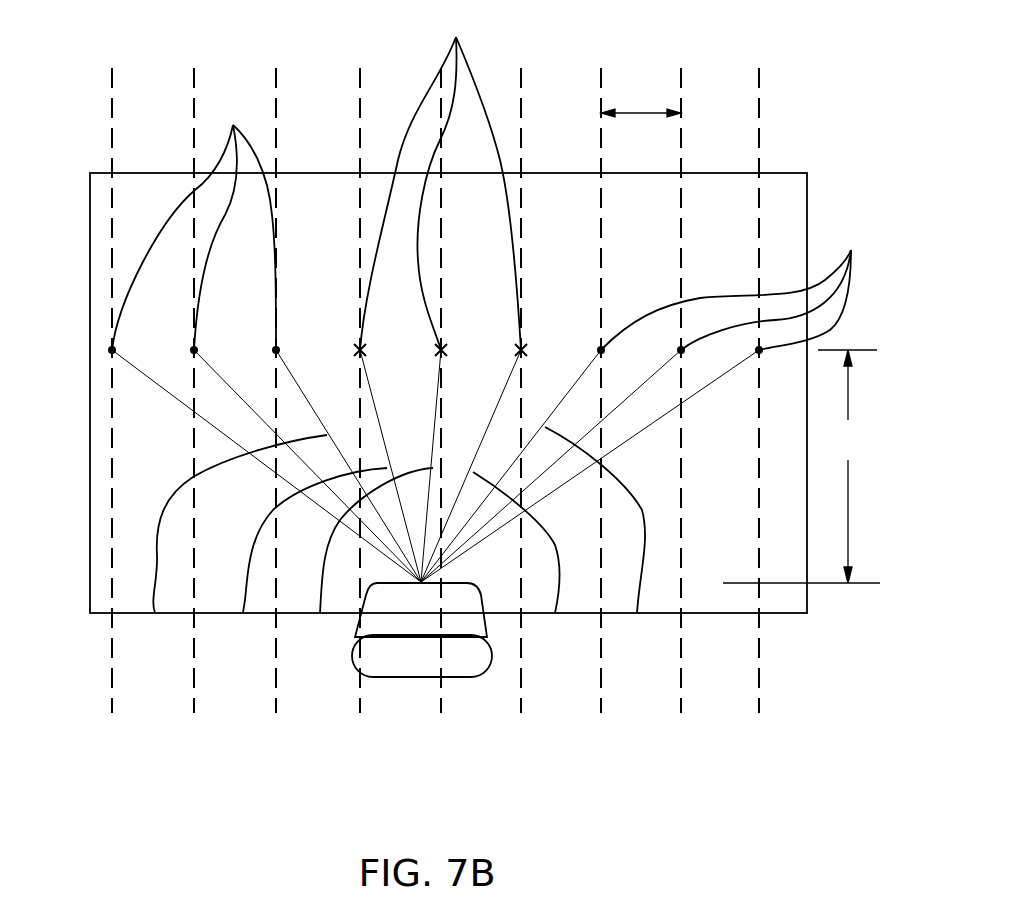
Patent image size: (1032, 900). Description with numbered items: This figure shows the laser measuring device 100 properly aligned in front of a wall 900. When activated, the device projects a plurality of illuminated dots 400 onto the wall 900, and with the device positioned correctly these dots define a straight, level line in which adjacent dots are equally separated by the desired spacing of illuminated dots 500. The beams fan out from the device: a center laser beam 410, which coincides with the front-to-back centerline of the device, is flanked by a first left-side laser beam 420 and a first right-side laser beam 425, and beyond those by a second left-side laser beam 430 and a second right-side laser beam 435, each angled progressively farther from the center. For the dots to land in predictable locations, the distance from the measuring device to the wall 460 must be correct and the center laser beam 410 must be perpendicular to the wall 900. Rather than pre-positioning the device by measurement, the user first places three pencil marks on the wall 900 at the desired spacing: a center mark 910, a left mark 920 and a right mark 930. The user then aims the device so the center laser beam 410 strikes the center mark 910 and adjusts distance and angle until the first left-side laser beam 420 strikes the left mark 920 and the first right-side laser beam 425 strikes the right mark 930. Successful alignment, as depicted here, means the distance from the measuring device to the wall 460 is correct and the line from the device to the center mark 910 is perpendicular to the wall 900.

The laser measuring device 100 is at (470, 677).
The plurality of illuminated dots 400 is at (495, 177).
The center laser beam 410 is at (320, 613).
The first left-side laser beam 420 is at (243, 613).
The first right-side laser beam 425 is at (555, 613).
The second left-side laser beam 430 is at (155, 613).
The second right-side laser beam 435 is at (637, 613).
The distance from the measuring device to the wall 460 is at (801, 466).
The desired spacing of illuminated dots 500 is at (640, 113).
The wall 900 is at (785, 173).
The center mark 910 is at (442, 348).
The left mark 920 is at (359, 348).
The right mark 930 is at (523, 347).